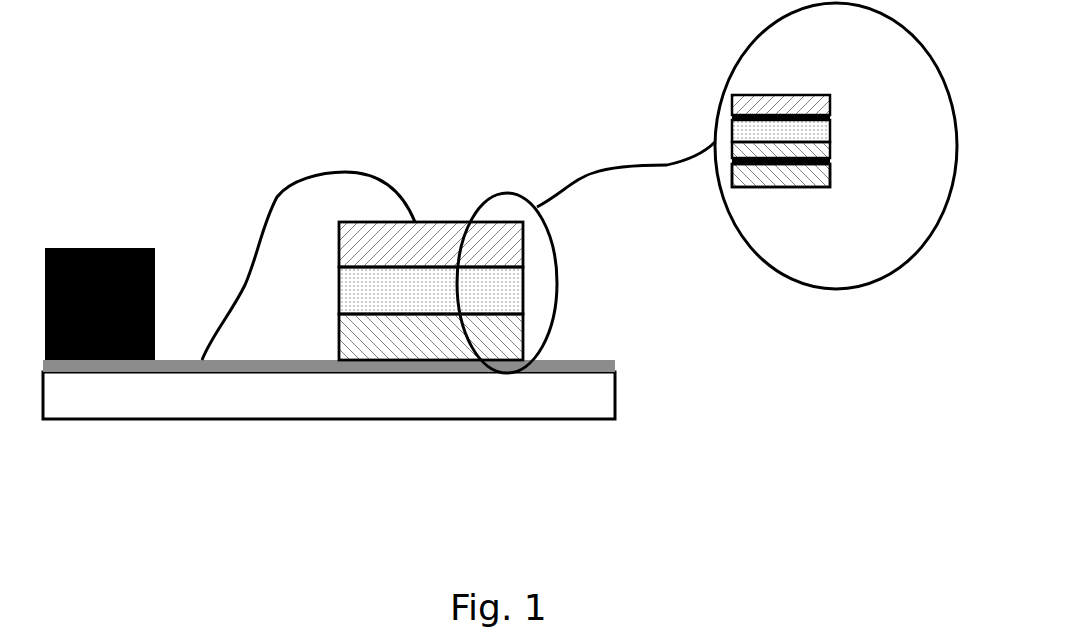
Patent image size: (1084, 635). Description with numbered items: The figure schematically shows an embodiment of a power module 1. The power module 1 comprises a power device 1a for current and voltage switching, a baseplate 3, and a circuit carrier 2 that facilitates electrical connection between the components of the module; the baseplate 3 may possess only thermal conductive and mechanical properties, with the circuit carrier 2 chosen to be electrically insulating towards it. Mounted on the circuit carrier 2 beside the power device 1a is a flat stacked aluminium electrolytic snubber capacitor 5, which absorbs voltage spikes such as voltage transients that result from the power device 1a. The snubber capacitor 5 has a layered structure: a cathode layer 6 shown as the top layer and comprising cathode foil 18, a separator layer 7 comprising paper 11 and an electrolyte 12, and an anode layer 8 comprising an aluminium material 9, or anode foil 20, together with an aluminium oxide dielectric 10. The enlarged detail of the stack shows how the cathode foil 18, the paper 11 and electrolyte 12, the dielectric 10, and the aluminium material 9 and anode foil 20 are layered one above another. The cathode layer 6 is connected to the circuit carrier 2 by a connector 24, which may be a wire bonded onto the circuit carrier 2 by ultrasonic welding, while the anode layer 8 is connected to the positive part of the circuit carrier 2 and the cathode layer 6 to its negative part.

The power module 1 is at (635, 64).
The power device 1a is at (92, 248).
The circuit carrier 2 is at (617, 365).
The baseplate 3 is at (615, 398).
The stacked aluminium electrolytic snubber capacitor 5 is at (527, 206).
The cathode layer 6 is at (525, 242).
The separator layer 7 is at (525, 293).
The anode layer 8 is at (525, 332).
The aluminium material 9 is at (830, 175).
The anode foil 20 is at (781, 175).
The dielectric 10 is at (830, 152).
The paper 11 is at (830, 123).
The electrolyte 12 is at (781, 117).
The cathode foil 18 is at (830, 103).
The connector 24 is at (275, 198).